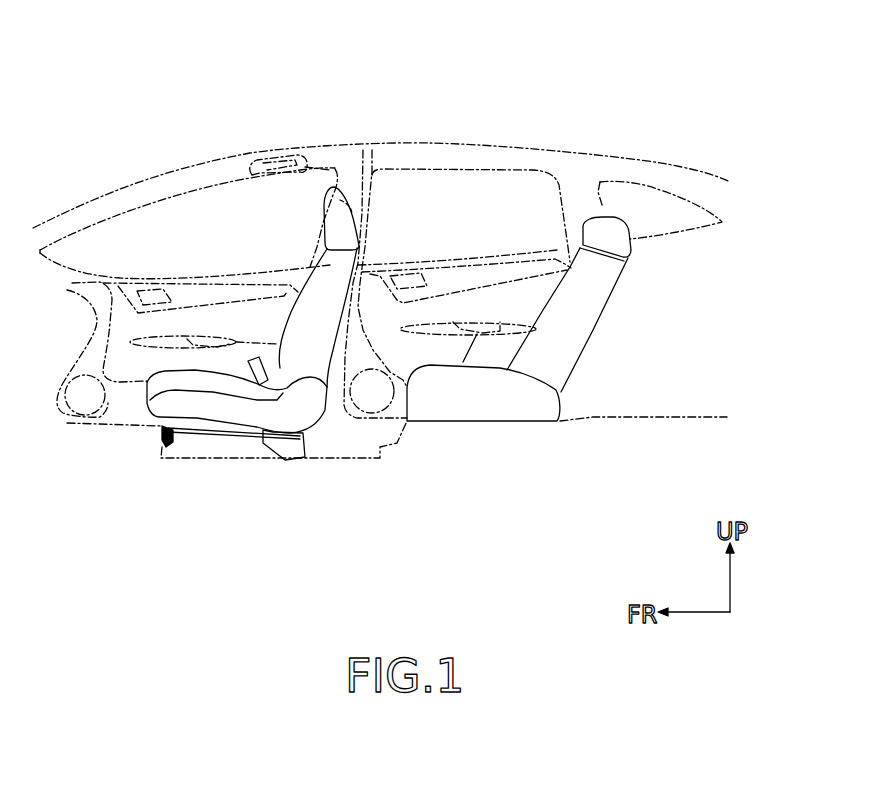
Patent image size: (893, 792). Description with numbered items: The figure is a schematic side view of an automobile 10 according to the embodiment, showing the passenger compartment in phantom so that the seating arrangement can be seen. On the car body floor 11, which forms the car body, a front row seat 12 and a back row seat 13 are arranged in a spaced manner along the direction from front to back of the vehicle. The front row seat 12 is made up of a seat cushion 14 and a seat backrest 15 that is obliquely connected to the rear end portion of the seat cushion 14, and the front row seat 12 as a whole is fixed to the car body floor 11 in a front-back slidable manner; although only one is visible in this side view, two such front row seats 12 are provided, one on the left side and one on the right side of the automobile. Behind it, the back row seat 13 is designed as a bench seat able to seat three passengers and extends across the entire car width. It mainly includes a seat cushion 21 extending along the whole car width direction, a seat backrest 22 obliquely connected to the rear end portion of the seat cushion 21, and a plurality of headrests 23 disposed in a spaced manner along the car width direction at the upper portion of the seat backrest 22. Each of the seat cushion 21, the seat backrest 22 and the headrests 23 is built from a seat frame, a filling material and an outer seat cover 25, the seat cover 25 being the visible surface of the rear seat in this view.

The automobile 10 is at (655, 150).
The car body floor 11 is at (400, 443).
The front row seat 12 is at (345, 182).
The back row seat 13 is at (612, 203).
The seat cushion 14 is at (227, 410).
The seat backrest 15 is at (313, 327).
The seat cushion 21 is at (567, 298).
The seat backrest 22 is at (573, 338).
The headrest 23 is at (620, 243).
The seat cover 25 is at (513, 403).